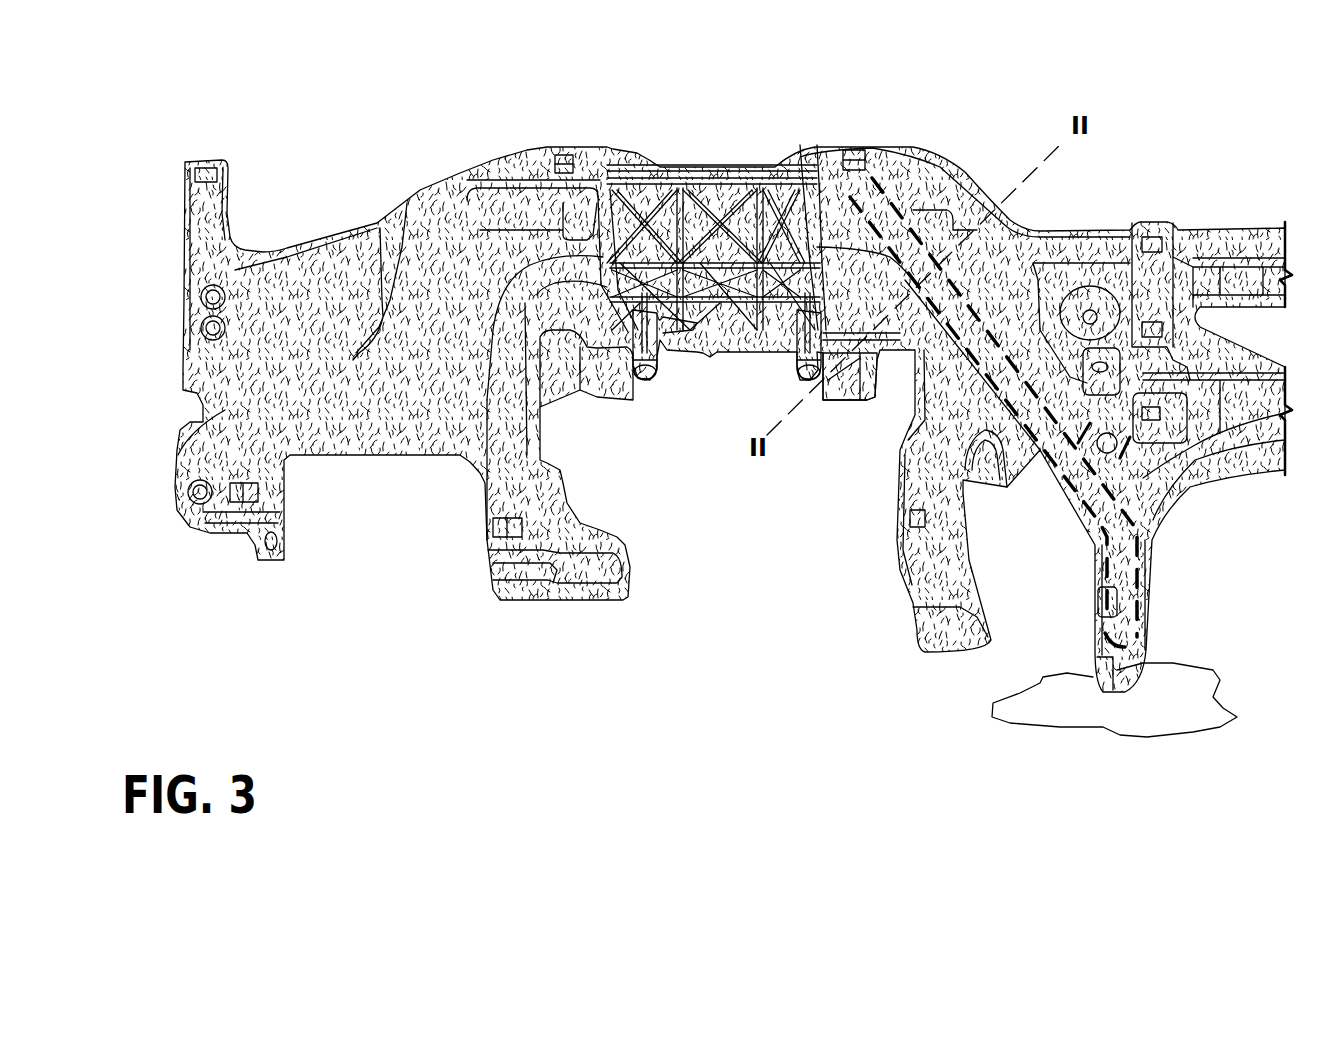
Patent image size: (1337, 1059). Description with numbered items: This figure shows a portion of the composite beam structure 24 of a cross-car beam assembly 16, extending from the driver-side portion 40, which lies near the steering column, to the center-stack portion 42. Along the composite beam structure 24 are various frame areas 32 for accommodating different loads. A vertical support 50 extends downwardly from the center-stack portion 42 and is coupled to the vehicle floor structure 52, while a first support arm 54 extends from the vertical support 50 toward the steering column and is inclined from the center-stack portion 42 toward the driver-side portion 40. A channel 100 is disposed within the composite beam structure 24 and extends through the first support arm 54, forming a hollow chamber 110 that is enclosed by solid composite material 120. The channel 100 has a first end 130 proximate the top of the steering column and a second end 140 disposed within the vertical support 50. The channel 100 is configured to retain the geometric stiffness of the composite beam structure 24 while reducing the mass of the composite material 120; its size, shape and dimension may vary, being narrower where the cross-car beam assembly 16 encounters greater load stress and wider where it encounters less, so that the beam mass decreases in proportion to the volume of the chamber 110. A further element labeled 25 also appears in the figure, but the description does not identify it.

The driver-side portion 40 is at (418, 150).
The cross-car beam assembly 16 is at (633, 122).
The first end 130 is at (817, 182).
The channel 100 is at (913, 213).
The hollow chamber 110 is at (995, 385).
The first support arm 54 is at (975, 165).
The center-stack portion 42 is at (1137, 172).
The composite beam structure 24 is at (1153, 205).
The mounting plate 25 is at (1068, 253).
The solid composite material 120 is at (947, 373).
The frame areas 32 is at (373, 400).
The vertical support 50 is at (1147, 577).
The second end 140 is at (1133, 630).
The vehicle floor structure 52 is at (1168, 700).